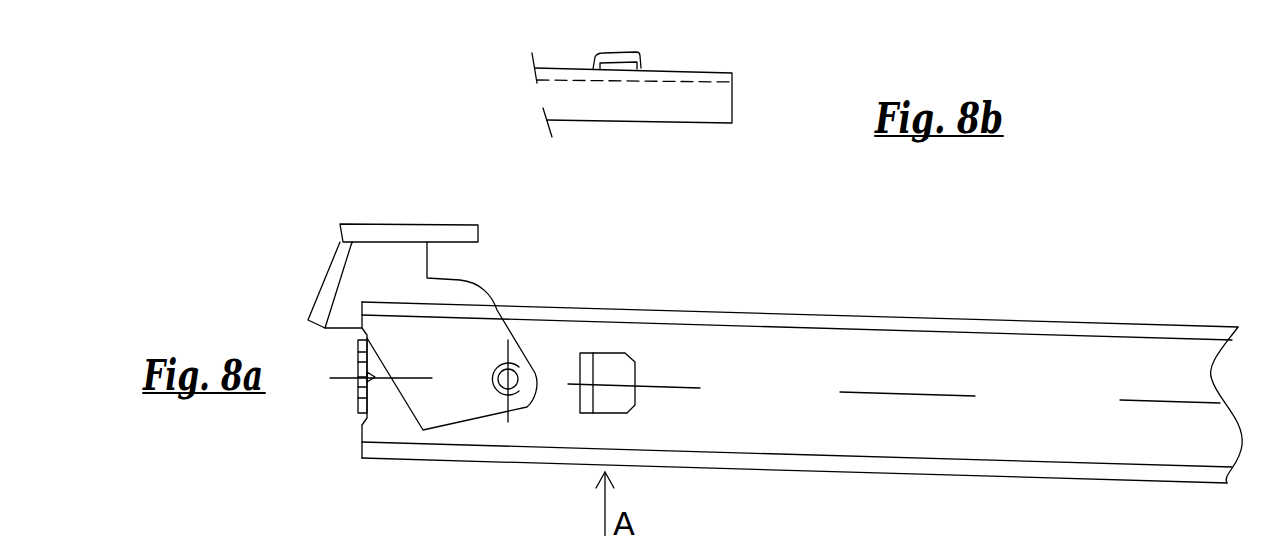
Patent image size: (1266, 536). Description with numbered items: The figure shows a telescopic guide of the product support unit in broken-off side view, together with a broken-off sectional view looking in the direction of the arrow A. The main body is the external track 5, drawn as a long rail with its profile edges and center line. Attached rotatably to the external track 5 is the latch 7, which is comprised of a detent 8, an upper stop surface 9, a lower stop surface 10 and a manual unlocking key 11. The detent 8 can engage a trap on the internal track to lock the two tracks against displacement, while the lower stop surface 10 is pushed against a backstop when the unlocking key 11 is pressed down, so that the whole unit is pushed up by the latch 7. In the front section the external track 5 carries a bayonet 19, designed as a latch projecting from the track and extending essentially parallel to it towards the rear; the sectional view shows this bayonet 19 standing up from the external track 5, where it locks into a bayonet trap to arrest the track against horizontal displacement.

In FIG. 8a, the external track 5 is at (637, 333).
In FIG. 8b, the external track 5 is at (617, 103).
In FIG. 8a, the latch 7 is at (382, 268).
In FIG. 8a, the detent 8 is at (330, 288).
In FIG. 8a, the upper stop surface 9 is at (480, 285).
In FIG. 8a, the lower stop surface 10 is at (422, 430).
In FIG. 8a, the manual unlocking key 11 is at (392, 238).
In FIG. 8a, the bayonet 19 is at (623, 380).
In FIG. 8b, the bayonet 19 is at (643, 70).